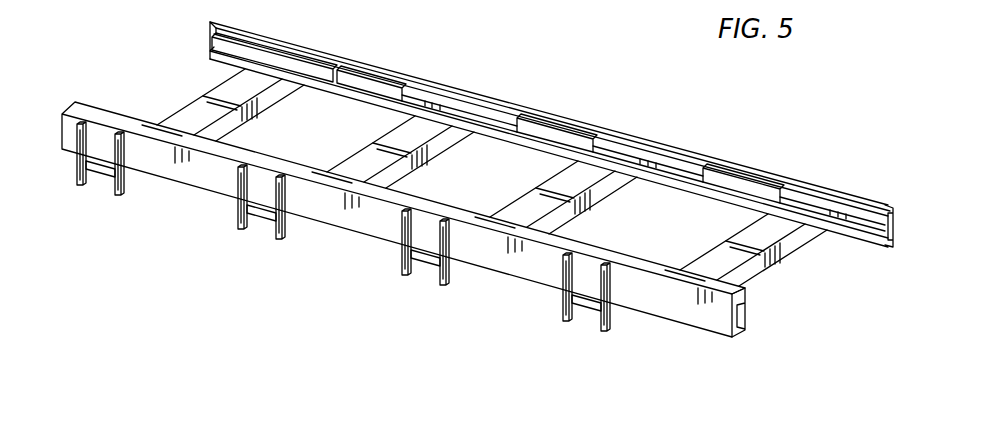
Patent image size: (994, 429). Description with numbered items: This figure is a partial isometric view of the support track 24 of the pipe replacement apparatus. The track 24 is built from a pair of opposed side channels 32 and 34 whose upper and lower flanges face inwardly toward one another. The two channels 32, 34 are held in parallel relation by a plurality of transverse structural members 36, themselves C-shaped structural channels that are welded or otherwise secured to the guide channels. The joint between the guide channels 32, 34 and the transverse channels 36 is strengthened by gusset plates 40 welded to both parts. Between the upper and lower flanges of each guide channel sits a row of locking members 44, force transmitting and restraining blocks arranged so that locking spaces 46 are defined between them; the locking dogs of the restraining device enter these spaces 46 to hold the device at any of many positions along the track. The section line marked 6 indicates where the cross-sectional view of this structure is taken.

The support track 24 is at (478, 56).
The side channel 32 is at (728, 161).
The side channel 34 is at (684, 319).
The transverse structural member 36 is at (253, 96).
The gusset plate 40 is at (292, 217).
The locking member 44 is at (488, 115).
The locking space 46 is at (407, 85).
The section line 6- 6 is at (783, 164).